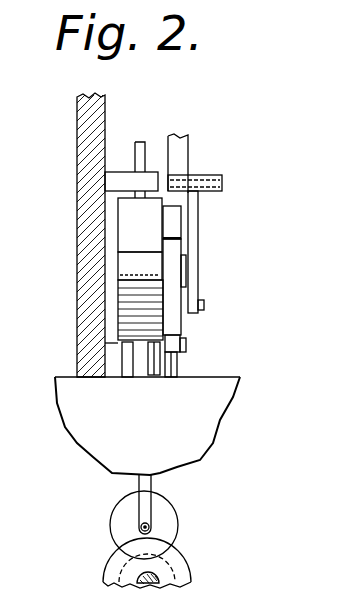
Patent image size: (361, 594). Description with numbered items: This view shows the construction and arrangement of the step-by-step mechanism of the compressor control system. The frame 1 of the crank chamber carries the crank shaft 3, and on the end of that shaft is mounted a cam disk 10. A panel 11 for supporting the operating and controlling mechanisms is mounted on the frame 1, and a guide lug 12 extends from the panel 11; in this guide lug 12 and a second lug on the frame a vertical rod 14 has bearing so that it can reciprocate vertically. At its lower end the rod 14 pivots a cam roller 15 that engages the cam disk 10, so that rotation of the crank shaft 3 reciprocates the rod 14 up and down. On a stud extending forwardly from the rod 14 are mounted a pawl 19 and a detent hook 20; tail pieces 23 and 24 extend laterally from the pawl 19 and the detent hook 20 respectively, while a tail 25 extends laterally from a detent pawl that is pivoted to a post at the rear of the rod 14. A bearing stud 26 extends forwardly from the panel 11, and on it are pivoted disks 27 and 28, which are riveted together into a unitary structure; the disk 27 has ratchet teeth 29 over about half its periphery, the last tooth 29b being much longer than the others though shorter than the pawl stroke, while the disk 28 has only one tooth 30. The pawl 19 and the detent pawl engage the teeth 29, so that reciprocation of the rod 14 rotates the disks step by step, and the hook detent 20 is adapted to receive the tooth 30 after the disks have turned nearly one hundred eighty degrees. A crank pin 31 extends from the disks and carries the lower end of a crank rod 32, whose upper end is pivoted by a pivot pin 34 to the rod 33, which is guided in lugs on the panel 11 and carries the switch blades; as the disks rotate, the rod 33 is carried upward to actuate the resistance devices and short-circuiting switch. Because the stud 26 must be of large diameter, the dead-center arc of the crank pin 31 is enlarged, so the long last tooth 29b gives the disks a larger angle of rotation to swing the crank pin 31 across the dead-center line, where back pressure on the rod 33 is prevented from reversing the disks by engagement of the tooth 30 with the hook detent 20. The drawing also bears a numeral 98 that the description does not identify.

The frame 1 is at (212, 409).
The crank shaft 3 is at (150, 583).
The cam disk 10 is at (178, 565).
The panel 11 is at (93, 114).
The guide lug 12 is at (122, 180).
The vertical rod 14 is at (180, 357).
The cam roller 15 is at (162, 511).
The pawl 19 is at (150, 347).
The detent hook 20 is at (186, 343).
The tail piece 23 is at (156, 361).
The tail piece 24 is at (175, 377).
The tail 25 is at (148, 352).
The bearing stud 26 is at (183, 274).
The disk 27 is at (118, 233).
The disk 28 is at (172, 319).
The ratchet teeth 29 is at (120, 322).
The last tooth 29b is at (130, 268).
The tooth 30 is at (165, 231).
The crank pin 31 is at (205, 305).
The crank rod 32 is at (193, 241).
The rod 33 is at (178, 149).
The pivot pin 34 is at (216, 189).
The bolt 98 is at (213, 181).